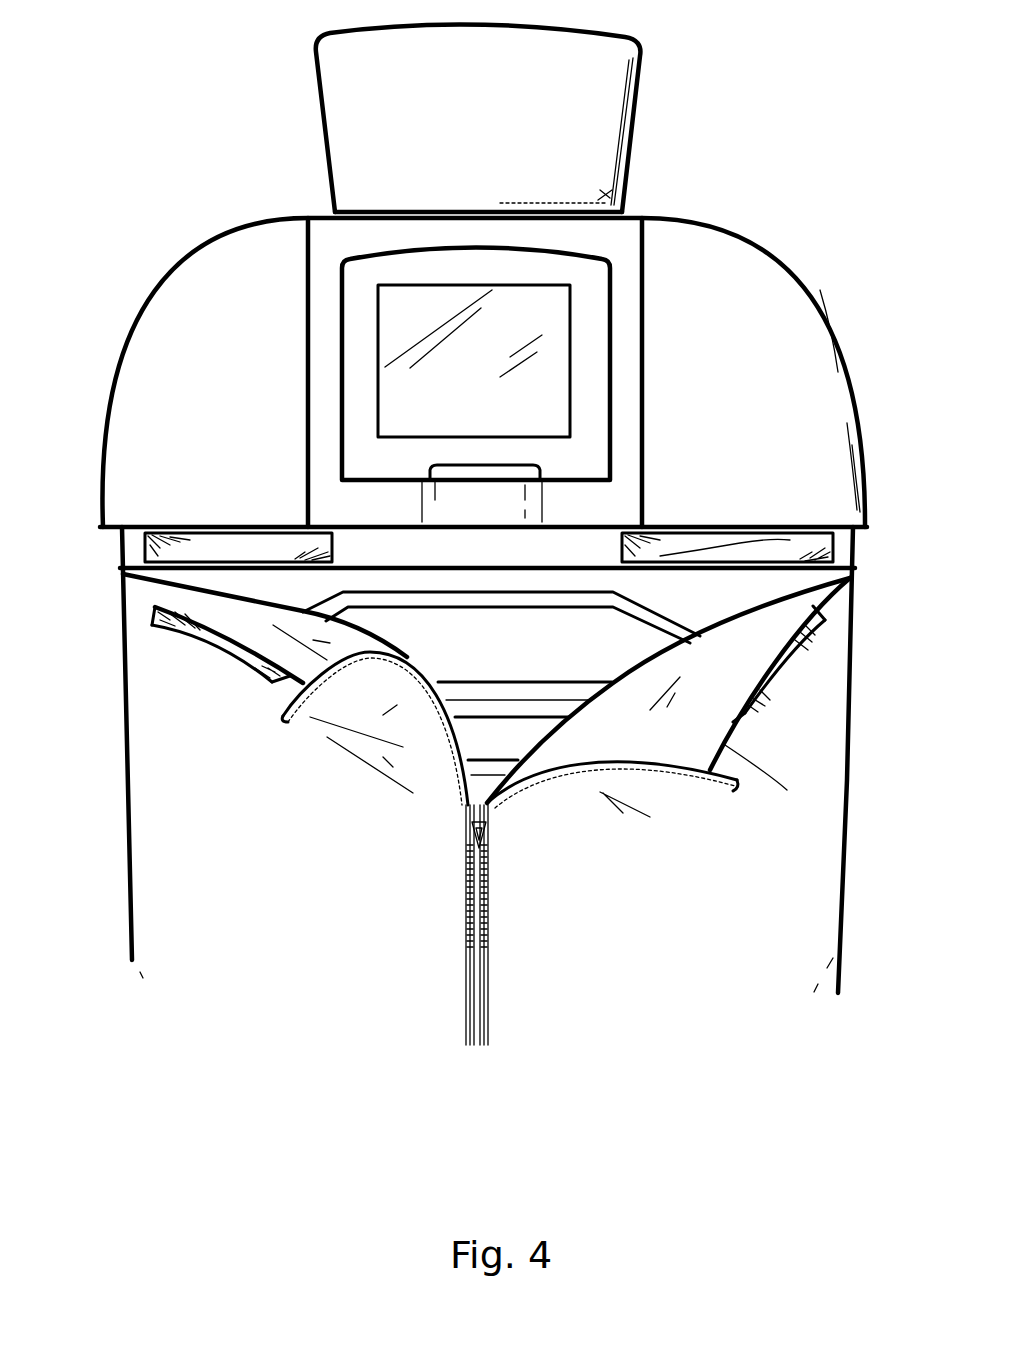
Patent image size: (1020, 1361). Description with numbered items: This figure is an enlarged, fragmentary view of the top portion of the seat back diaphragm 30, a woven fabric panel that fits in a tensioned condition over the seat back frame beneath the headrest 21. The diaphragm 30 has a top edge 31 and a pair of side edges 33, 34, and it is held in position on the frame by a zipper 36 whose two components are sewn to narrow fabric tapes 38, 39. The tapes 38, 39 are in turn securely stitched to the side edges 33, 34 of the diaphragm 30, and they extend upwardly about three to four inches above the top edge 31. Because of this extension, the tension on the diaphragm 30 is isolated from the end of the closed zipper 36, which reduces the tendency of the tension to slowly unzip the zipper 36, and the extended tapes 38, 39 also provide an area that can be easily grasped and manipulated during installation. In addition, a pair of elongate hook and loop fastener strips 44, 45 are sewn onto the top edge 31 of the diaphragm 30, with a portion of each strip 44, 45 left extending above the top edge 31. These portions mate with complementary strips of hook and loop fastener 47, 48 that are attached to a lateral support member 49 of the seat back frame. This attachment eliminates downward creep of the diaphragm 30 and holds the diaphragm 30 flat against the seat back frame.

The headrest 21 is at (595, 163).
The lateral support member 49 is at (597, 553).
The complementary strip of hook and loop fastener 47 is at (723, 548).
The complementary strip of hook and loop fastener 48 is at (229, 548).
The hook and loop fastener strip 45 is at (233, 641).
The hook and loop fastener strip 44 is at (783, 652).
The top edge 31 is at (293, 683).
The fabric tape 39 is at (285, 724).
The fabric tape 38 is at (685, 768).
The seat back diaphragm 30 is at (808, 927).
The side edge 33 is at (465, 1020).
The side edge 34 is at (488, 1020).
The zipper 36 is at (488, 920).